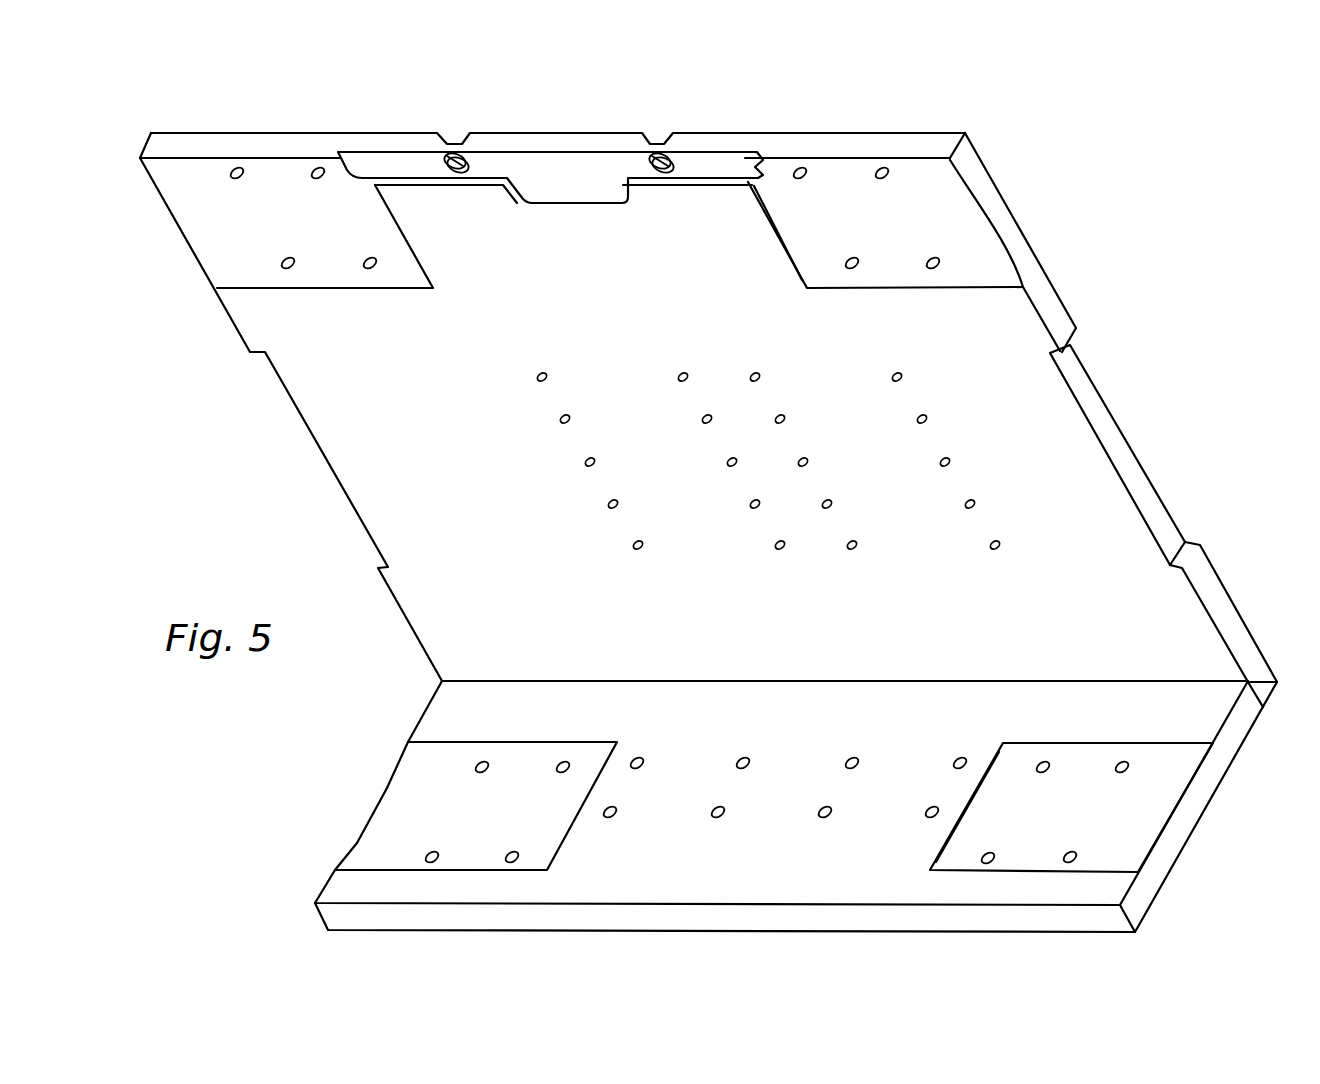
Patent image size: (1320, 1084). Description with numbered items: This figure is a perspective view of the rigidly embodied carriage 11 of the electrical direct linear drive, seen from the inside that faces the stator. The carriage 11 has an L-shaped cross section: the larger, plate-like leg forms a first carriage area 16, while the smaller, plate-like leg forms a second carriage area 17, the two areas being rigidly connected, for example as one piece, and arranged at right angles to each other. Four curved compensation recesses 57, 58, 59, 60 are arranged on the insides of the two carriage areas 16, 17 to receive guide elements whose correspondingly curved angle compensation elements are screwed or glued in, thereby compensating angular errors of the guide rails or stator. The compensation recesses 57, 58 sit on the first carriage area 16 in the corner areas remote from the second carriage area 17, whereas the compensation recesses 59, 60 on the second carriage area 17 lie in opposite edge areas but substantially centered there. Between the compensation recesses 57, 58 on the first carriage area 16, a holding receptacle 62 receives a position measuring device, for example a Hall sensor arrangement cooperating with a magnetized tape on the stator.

The carriage 11 is at (1125, 413).
The first carriage area 16 is at (352, 457).
The second carriage area 17 is at (340, 917).
The compensation recess 57 is at (215, 215).
The compensation recess 58 is at (963, 217).
The compensation recess 59 is at (410, 798).
The compensation recess 60 is at (1157, 815).
The holding receptacle 62 is at (563, 178).